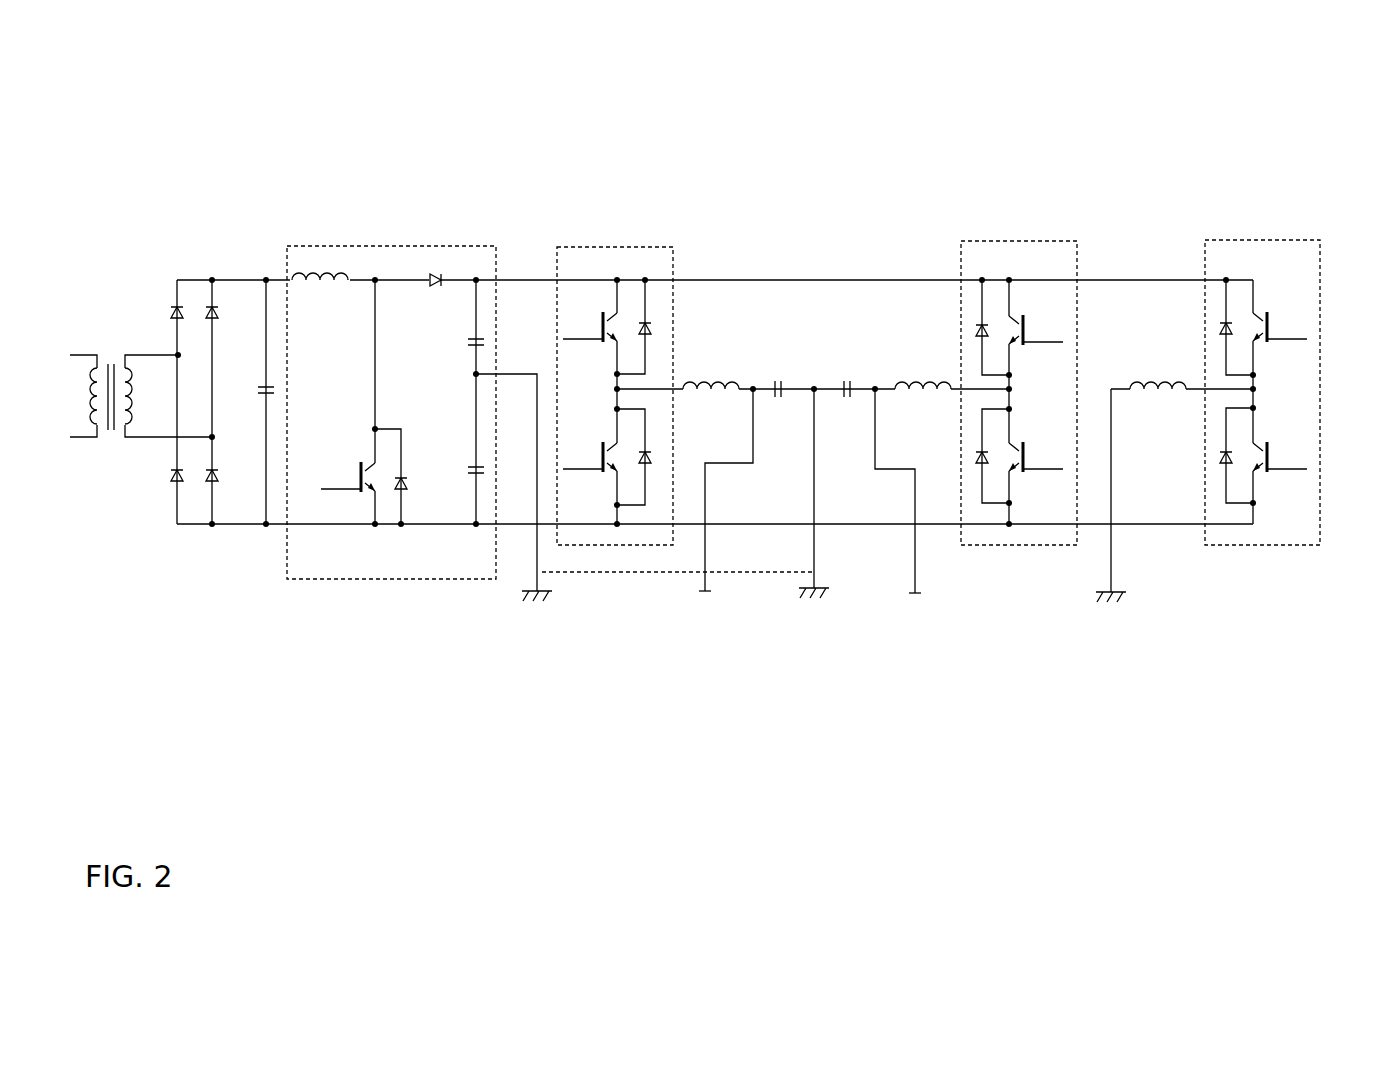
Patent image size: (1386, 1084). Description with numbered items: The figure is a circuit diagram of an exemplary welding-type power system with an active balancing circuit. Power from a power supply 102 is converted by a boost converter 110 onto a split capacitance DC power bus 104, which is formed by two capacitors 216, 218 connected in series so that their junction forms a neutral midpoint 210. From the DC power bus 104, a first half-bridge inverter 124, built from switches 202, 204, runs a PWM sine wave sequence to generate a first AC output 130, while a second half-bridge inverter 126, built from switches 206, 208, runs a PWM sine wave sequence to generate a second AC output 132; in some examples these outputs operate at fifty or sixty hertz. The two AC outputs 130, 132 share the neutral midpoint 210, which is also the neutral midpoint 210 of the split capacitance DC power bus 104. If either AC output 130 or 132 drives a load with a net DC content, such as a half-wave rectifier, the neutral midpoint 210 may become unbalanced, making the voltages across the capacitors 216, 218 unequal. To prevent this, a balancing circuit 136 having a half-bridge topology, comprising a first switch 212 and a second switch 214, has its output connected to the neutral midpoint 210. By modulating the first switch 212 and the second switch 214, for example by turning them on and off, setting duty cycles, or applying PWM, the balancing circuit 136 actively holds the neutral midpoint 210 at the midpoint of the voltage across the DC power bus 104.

The power supply 102 is at (112, 332).
The split capacitance DC power bus 104 is at (480, 278).
The boost converter 110 is at (372, 345).
The first half-bridge inverter 124 is at (628, 349).
The second half-bridge inverter 126 is at (1040, 342).
The first AC output 130 is at (688, 592).
The second AC output 132 is at (936, 591).
The balancing circuit 136 is at (1281, 368).
The switch 202 is at (665, 337).
The switch 204 is at (665, 460).
The switch 206 is at (1044, 335).
The switch 208 is at (1042, 442).
The neutral midpoint 210 is at (528, 622).
The first switch 212 is at (1302, 323).
The second switch 214 is at (1302, 458).
The capacitor 216 is at (464, 344).
The capacitor 218 is at (464, 458).